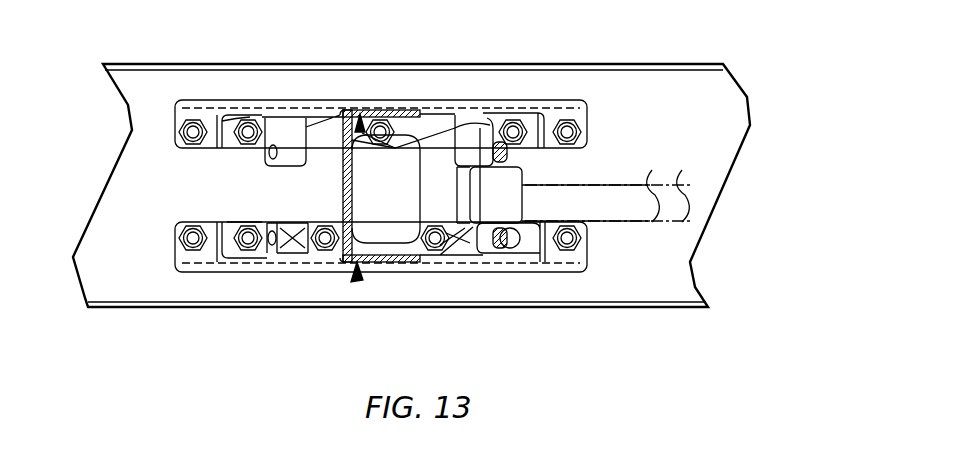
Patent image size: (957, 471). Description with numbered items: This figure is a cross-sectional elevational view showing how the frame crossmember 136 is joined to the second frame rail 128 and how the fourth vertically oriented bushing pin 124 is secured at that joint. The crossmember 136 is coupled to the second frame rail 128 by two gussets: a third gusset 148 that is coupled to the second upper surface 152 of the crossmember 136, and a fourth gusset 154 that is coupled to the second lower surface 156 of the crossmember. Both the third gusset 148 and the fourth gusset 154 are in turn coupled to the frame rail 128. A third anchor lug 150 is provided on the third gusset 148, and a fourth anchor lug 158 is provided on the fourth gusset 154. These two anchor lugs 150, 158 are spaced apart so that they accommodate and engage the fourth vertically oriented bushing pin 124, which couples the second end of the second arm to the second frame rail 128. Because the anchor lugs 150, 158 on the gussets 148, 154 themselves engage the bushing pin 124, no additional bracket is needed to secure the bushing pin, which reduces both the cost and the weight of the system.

The second frame rail 128 is at (618, 87).
The third gusset 148 is at (185, 103).
The third anchor lug 150 is at (470, 142).
The frame crossmember 136 is at (343, 180).
The second upper surface 152 is at (358, 135).
The second lower surface 156 is at (357, 276).
The fourth vertically oriented bushing pin 124 is at (512, 186).
The fourth gusset 154 is at (543, 272).
The fourth anchor lug 158 is at (437, 234).